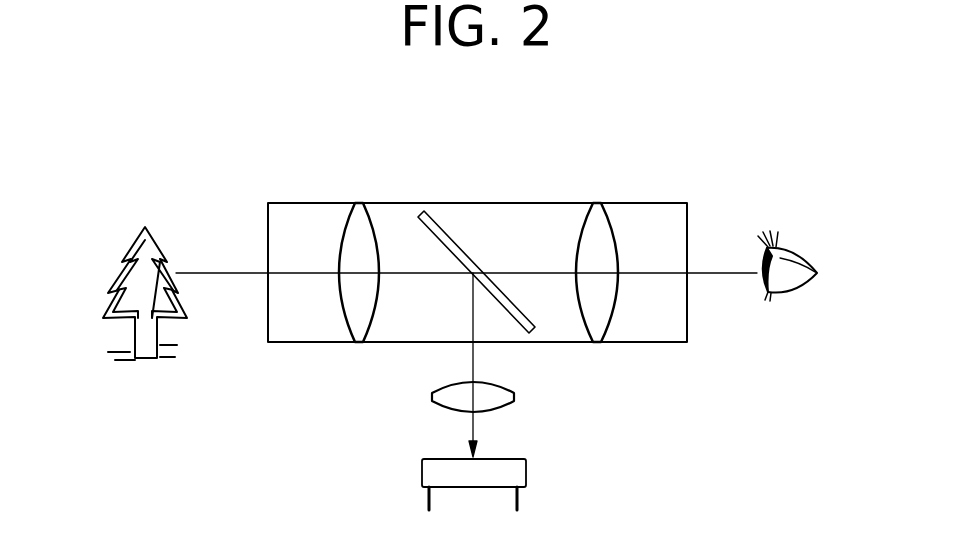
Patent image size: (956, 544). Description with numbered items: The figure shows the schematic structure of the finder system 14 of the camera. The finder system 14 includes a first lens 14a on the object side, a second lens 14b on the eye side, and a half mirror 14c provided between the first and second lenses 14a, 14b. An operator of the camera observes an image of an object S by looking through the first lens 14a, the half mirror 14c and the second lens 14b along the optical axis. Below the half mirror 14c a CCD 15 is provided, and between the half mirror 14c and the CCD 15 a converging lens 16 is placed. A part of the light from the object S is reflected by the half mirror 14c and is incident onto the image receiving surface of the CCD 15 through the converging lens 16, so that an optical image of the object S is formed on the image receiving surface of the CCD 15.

The finder system 14 is at (553, 200).
The first lens 14a is at (355, 228).
The second lens 14b is at (602, 310).
The half mirror 14c is at (450, 232).
The CCD 15 is at (430, 473).
The converging lens 16 is at (440, 396).
The object S is at (132, 250).